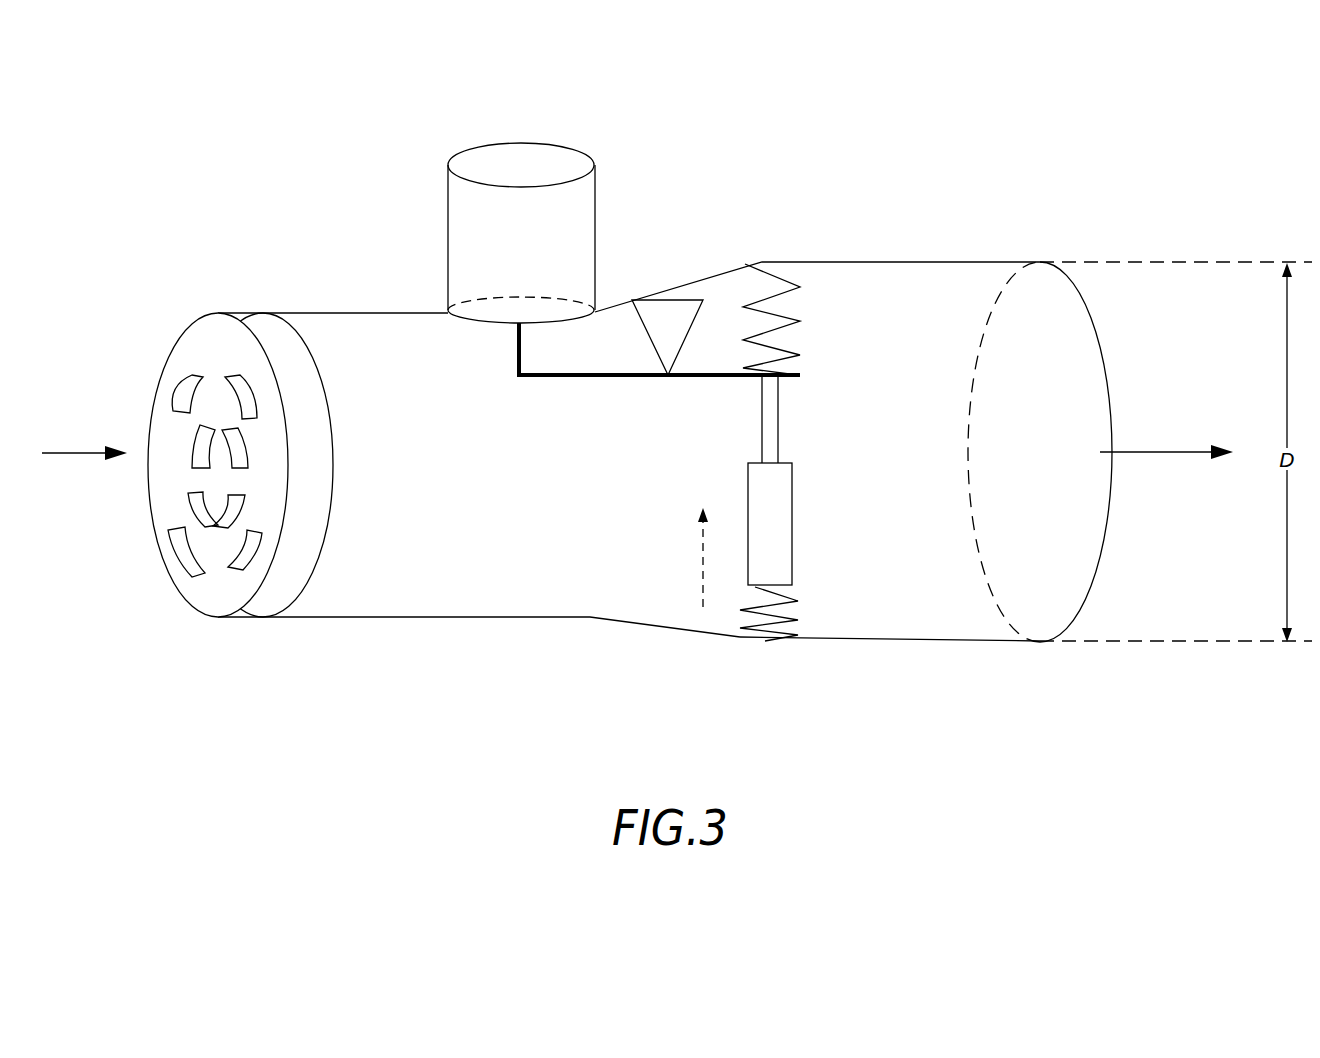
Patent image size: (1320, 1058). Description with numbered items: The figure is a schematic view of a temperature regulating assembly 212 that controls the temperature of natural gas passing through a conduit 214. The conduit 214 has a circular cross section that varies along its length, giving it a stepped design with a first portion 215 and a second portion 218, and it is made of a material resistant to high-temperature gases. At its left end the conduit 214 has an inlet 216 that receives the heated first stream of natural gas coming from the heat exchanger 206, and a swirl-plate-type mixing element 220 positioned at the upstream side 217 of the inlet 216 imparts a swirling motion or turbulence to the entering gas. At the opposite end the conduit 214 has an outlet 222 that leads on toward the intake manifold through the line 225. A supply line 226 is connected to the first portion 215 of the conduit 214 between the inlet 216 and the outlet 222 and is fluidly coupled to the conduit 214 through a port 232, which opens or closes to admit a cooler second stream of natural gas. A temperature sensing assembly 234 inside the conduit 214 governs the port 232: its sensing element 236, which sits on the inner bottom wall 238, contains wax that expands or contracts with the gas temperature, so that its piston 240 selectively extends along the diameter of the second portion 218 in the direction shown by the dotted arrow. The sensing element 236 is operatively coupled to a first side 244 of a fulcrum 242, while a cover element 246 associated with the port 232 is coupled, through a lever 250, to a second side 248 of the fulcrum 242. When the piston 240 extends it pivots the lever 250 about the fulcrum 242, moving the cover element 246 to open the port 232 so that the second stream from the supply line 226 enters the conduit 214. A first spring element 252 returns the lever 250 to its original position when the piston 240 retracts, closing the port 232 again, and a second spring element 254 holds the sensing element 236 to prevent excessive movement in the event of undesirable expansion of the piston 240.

The temperature regulating assembly 212 is at (1082, 138).
The conduit 214 is at (368, 285).
The first portion 215 is at (495, 645).
The inlet 216 is at (268, 329).
The upstream side 217 is at (152, 638).
The second portion 218 is at (965, 693).
The mixing element 220 is at (212, 341).
The outlet 222 is at (1050, 452).
The supply line 226 is at (575, 203).
The port 232 is at (511, 304).
The temperature sensing assembly 234 is at (830, 400).
The sensing element 236 is at (792, 522).
The inner bottom wall 238 is at (945, 633).
The piston 240 is at (762, 428).
The fulcrum 242 is at (667, 311).
The first side 244 is at (816, 333).
The cover element 246 is at (483, 324).
The second side 248 is at (515, 392).
The lever 250 is at (603, 378).
The first spring element 252 is at (788, 263).
The second spring element 254 is at (768, 640).
The heat exchanger 206 is at (81, 475).
The line 225 is at (1170, 475).